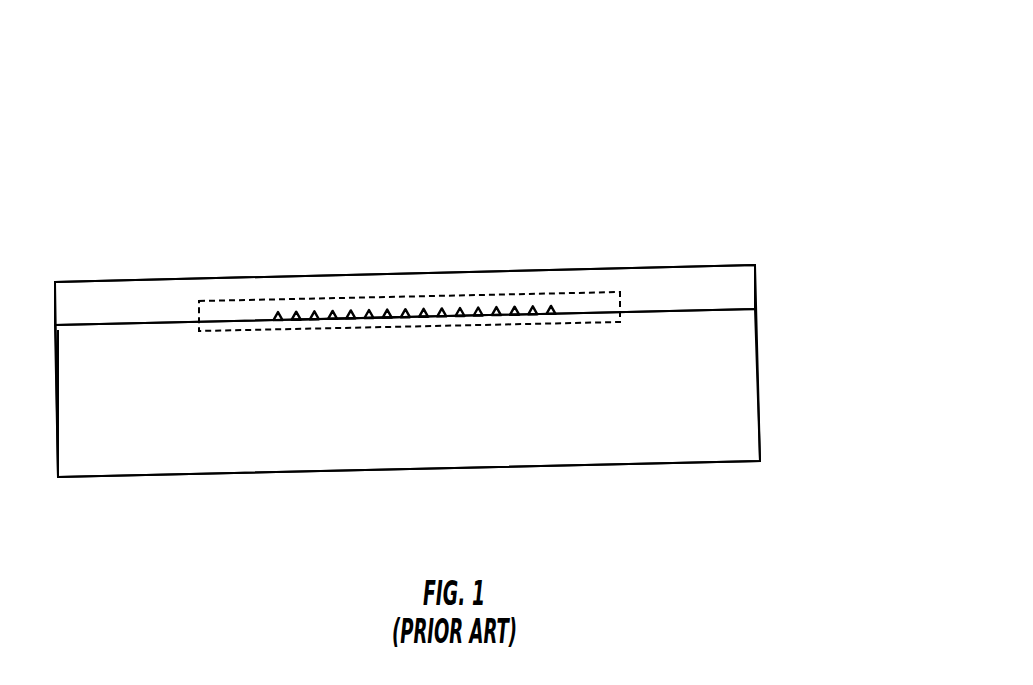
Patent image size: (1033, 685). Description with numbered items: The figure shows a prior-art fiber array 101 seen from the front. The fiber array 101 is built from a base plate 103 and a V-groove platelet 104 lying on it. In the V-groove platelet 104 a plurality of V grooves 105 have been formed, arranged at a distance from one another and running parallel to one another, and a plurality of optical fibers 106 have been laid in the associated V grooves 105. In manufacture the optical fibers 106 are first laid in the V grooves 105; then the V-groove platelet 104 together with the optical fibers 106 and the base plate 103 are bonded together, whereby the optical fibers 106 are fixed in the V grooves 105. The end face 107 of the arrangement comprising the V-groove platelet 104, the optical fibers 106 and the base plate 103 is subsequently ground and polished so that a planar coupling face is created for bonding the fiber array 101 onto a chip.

The fiber array 101 is at (615, 193).
The base plate 103 is at (722, 430).
The V-groove platelet 104 is at (740, 293).
The V grooves 105 is at (277, 317).
The optical fibers 106 is at (297, 320).
The end face 107 is at (112, 412).